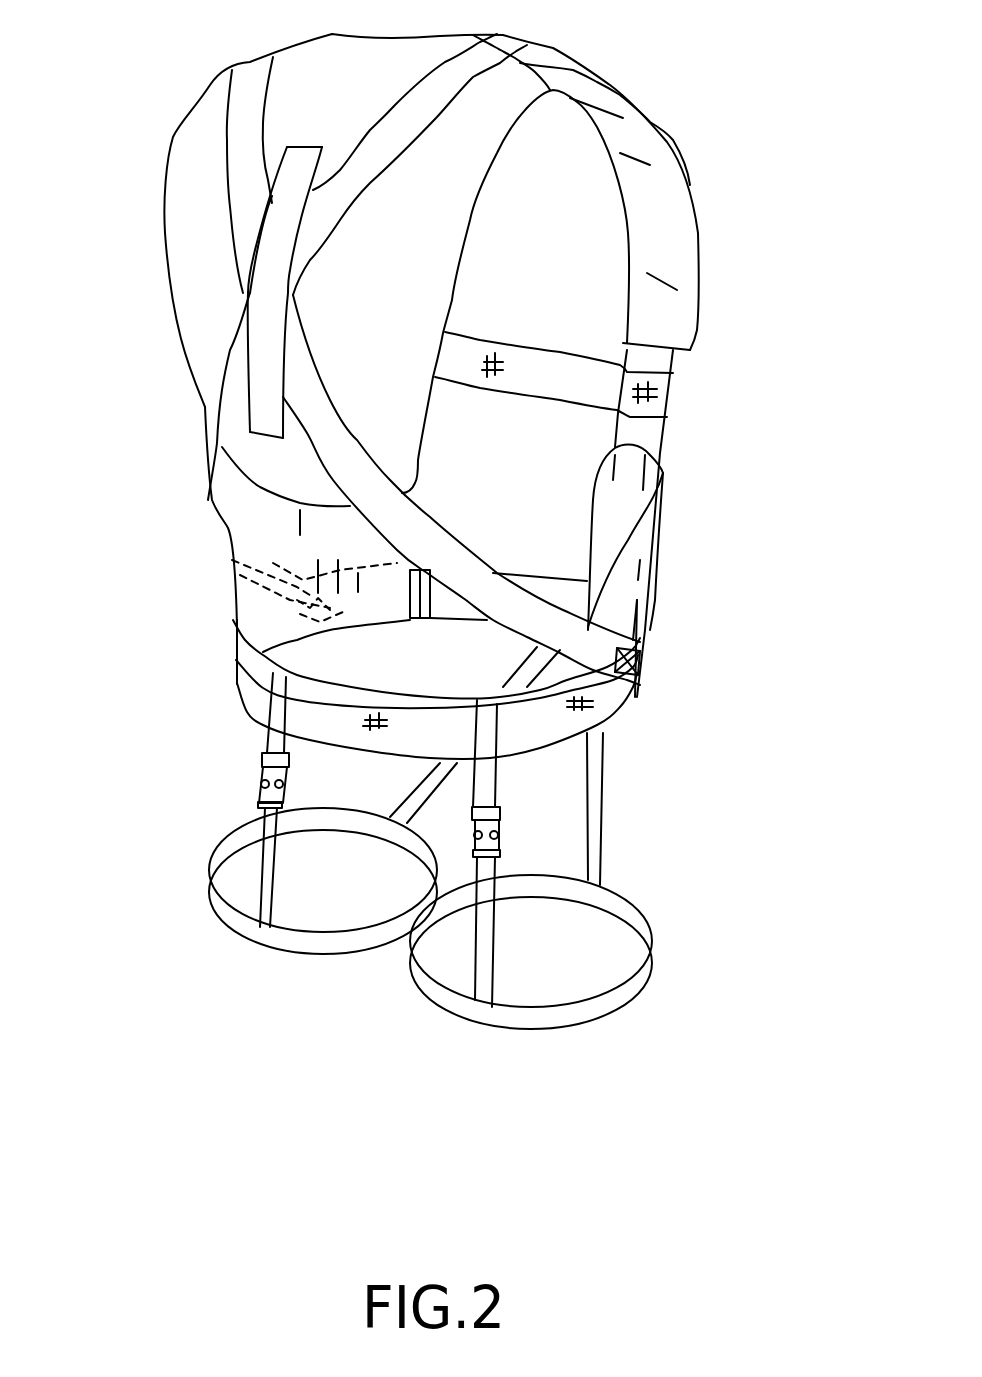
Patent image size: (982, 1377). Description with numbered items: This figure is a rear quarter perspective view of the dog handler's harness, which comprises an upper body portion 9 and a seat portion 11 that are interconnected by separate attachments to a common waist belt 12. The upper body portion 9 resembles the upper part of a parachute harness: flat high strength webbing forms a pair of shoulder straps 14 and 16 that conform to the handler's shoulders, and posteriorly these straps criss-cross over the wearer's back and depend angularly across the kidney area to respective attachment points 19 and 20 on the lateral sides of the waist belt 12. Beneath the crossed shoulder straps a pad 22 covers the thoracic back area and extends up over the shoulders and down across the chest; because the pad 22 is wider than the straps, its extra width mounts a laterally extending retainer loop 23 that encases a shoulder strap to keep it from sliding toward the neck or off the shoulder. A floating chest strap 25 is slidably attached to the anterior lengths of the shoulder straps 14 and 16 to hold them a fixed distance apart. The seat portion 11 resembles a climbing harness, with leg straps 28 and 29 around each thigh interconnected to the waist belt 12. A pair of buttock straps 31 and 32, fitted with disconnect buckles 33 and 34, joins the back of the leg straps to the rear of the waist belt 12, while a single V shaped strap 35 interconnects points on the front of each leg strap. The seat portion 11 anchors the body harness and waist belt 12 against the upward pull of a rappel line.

The upper body portion 9 is at (714, 406).
The seat portion 11 is at (682, 783).
The waist belt 12 is at (313, 707).
The shoulder strap 14 is at (248, 127).
The shoulder strap 16 is at (440, 105).
The attachment point 19 is at (640, 663).
The attachment point 20 is at (263, 608).
The pad 22 is at (445, 282).
The retainer loop 23 is at (533, 56).
The chest strap 25 is at (542, 385).
The leg strap 28 is at (253, 928).
The leg strap 29 is at (565, 1015).
The buttock strap 31 is at (265, 862).
The buttock strap 32 is at (490, 948).
The disconnect buckle 33 is at (507, 827).
The disconnect buckle 34 is at (288, 783).
The V shaped strap 35 is at (607, 752).